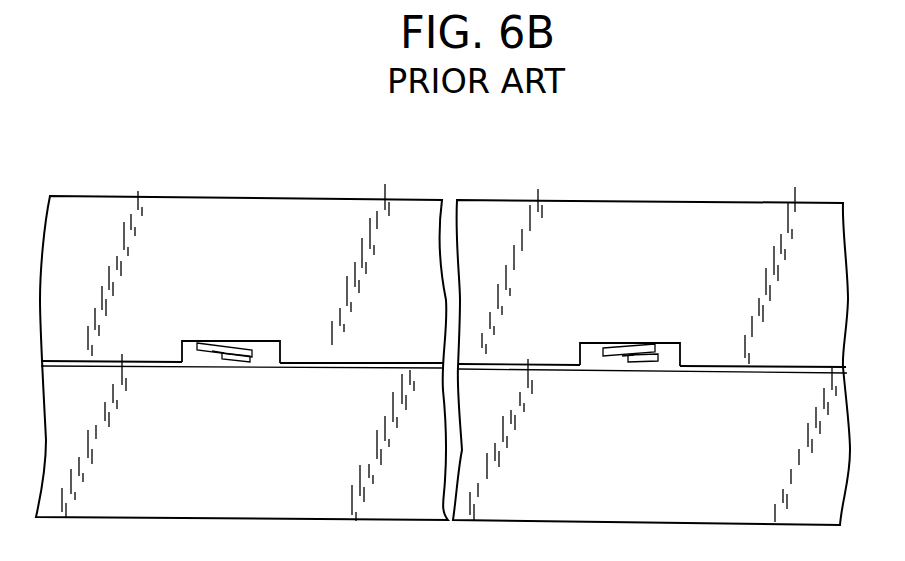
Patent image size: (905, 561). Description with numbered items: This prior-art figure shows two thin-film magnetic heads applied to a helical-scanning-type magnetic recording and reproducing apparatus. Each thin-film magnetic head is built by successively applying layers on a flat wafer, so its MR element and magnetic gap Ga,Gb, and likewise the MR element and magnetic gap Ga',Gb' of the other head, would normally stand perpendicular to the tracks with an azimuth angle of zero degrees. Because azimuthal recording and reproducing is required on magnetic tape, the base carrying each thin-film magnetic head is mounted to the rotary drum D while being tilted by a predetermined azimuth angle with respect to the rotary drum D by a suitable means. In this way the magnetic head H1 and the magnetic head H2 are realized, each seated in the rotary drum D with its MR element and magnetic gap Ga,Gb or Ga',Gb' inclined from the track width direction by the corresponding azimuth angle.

The rotary drum D is at (587, 195).
The magnetic head H1 is at (212, 355).
The magnetic head H2 is at (631, 359).
The MR element and magnetic gap Ga,Gb is at (218, 356).
The MR element and magnetic gap Ga',Gb' is at (593, 410).